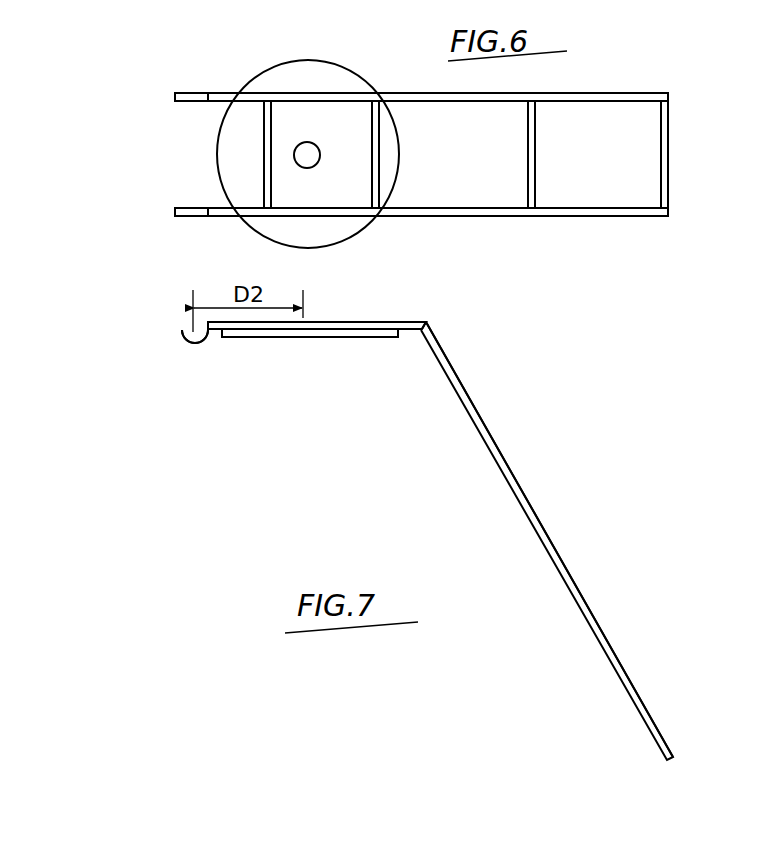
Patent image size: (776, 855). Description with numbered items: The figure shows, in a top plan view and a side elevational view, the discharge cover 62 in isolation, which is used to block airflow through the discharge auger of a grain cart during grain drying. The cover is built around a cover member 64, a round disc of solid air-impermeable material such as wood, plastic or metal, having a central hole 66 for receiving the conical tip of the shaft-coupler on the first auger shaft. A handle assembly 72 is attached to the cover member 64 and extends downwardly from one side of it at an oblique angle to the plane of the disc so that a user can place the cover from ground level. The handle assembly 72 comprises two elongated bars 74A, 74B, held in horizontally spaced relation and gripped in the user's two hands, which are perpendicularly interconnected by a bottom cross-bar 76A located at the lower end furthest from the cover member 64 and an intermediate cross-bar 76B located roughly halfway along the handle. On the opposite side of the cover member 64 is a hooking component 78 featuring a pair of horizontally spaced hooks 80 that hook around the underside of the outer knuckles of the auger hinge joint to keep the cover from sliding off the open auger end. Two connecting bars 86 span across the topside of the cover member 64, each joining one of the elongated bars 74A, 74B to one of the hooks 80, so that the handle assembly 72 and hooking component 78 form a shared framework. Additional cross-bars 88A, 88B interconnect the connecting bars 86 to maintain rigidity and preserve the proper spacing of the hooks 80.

In FIG. 6, the discharge cover 62 is at (257, 62).
In FIG. 7, the discharge cover 62 is at (405, 306).
In FIG. 6, the cover member 64 is at (320, 70).
In FIG. 7, the cover member 64 is at (347, 337).
In FIG. 6, the central hole 66 is at (312, 156).
In FIG. 6, the handle assembly 72 is at (602, 89).
In FIG. 7, the handle assembly 72 is at (575, 546).
In FIG. 6, the elongated bar 74A is at (582, 216).
In FIG. 7, the elongated bar 74A is at (592, 615).
In FIG. 6, the elongated bar 74B is at (605, 101).
In FIG. 6, the bottom cross-bar 76A is at (669, 148).
In FIG. 6, the intermediate cross-bar 76B is at (528, 138).
In FIG. 6, the hooking component 78 is at (168, 92).
In FIG. 7, the hooking component 78 is at (168, 333).
In FIG. 6, the hook 80 is at (187, 93).
In FIG. 7, the hook 80 is at (194, 345).
In FIG. 6, the connecting bar 86 is at (308, 96).
In FIG. 7, the connecting bar 86 is at (407, 331).
In FIG. 6, the additional cross-bar 88A is at (379, 147).
In FIG. 6, the additional cross-bar 88B is at (264, 181).